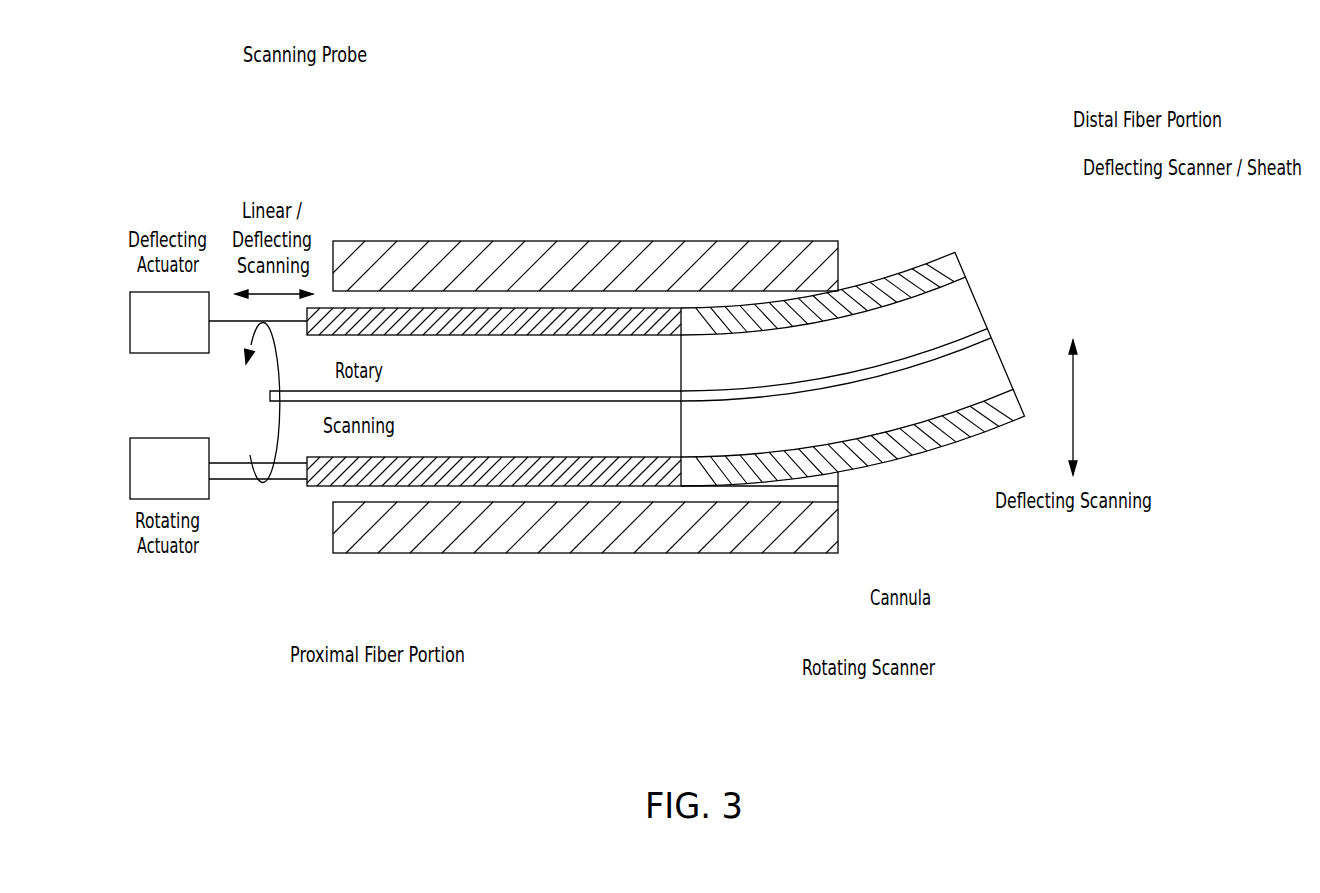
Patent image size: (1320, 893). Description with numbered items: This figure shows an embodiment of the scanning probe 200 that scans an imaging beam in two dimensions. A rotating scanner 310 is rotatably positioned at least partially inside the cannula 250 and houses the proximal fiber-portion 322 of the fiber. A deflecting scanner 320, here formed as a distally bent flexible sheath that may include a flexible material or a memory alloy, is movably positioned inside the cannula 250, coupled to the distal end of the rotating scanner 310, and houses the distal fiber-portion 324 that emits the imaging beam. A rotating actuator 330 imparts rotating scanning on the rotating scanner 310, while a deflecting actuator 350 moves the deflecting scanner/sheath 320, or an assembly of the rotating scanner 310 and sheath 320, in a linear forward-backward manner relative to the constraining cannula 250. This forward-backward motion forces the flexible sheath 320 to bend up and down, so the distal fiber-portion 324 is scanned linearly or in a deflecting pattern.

The scanning probe 200 is at (464, 82).
The cannula 250 is at (755, 553).
The rotating scanner 310 is at (657, 487).
The deflecting scanner/sheath 320 is at (957, 255).
The proximal fiber-portion 322 is at (610, 403).
The distal fiber-portion 324 is at (908, 363).
The rotating actuator 330 is at (193, 482).
The deflecting actuator 350 is at (193, 333).